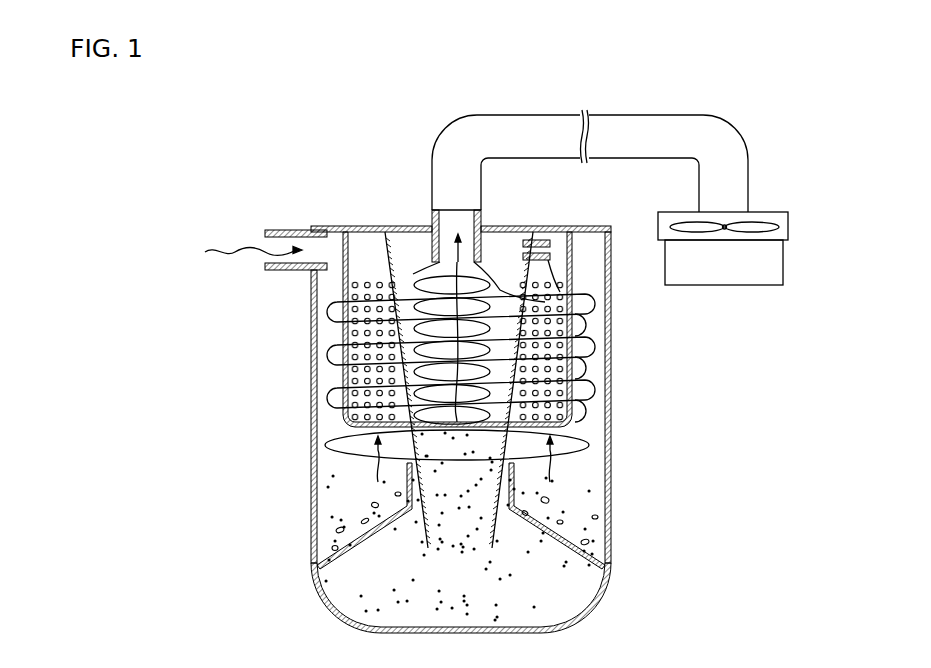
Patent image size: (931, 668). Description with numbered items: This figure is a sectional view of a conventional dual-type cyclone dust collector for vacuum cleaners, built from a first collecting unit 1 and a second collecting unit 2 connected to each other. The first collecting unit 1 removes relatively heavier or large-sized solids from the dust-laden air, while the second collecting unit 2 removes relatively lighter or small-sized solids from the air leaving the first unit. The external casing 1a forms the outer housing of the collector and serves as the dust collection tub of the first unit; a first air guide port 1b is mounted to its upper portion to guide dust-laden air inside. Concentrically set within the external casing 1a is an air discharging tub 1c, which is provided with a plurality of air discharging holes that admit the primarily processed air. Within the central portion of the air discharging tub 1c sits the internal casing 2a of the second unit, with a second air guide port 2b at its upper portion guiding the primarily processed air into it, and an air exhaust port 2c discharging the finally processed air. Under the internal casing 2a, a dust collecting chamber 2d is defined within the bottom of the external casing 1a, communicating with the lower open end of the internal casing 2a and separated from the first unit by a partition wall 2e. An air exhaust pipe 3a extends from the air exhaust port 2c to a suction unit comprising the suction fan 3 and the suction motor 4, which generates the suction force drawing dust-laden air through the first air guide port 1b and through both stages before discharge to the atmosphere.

The first collecting unit 1 is at (262, 285).
The external casing 1a is at (312, 330).
The first air guide port 1b is at (304, 272).
The air discharging tub 1c is at (334, 292).
The second collecting unit 2 is at (688, 320).
The internal casing 2a is at (572, 380).
The second air guide port 2b is at (560, 291).
The air exhaust port 2c is at (560, 302).
The dust collecting chamber 2d is at (573, 508).
The partition wall 2e is at (533, 543).
The suction fan 3 is at (783, 231).
The air exhaust pipe 3a is at (502, 108).
The suction motor 4 is at (768, 266).